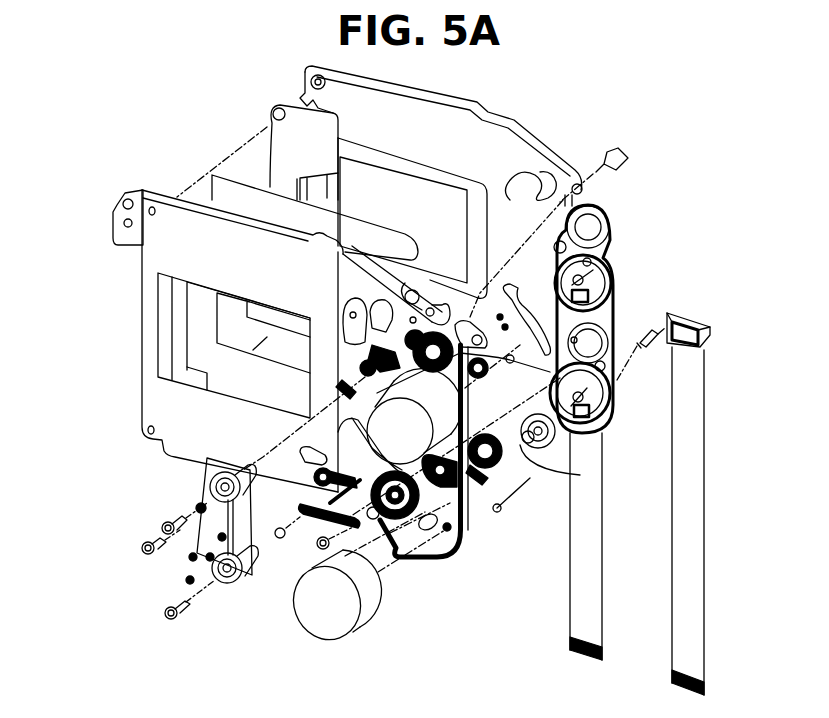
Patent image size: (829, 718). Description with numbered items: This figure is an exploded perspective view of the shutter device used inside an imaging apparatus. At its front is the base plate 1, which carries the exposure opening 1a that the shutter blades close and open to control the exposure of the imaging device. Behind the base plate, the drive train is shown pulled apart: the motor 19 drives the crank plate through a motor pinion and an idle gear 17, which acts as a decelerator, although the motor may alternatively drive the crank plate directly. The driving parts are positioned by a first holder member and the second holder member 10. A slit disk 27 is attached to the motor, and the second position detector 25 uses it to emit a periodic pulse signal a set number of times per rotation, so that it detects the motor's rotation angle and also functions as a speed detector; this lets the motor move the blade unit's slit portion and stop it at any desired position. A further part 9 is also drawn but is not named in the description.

The base plate 1 is at (153, 392).
The exposure opening 1a is at (158, 303).
The roller bracket 9 is at (207, 518).
The second holder member 10 is at (612, 303).
The idle gear 17 is at (510, 460).
The motor 19 is at (368, 591).
The second position detector 25 is at (683, 320).
The slit disk 27 is at (612, 433).